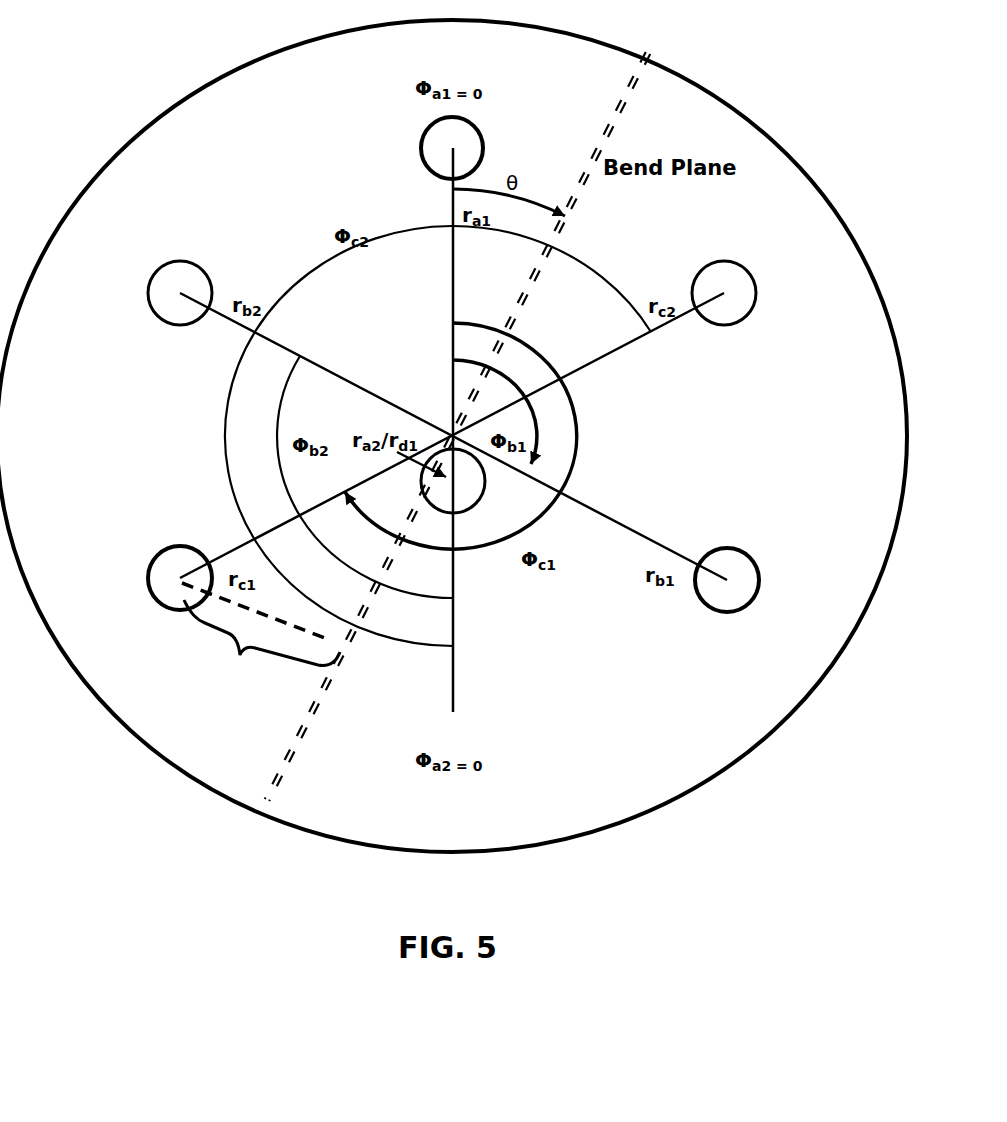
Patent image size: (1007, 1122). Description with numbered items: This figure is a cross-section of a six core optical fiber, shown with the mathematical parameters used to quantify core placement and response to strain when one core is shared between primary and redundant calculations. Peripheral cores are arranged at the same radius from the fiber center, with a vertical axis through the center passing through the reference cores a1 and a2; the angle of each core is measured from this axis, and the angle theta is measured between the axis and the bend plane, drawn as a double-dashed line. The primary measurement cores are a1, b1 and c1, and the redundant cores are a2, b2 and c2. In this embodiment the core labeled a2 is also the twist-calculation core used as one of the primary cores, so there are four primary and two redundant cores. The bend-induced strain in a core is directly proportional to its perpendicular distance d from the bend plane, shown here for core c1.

The primary measurement core a1 is at (438, 148).
The redundant measurement core a2 is at (466, 493).
The primary measurement core b1 is at (740, 581).
The redundant measurement core b2 is at (166, 293).
The primary measurement core c1 is at (169, 585).
The redundant measurement core c2 is at (736, 293).
The perpendicular distance from the bend plane d is at (261, 635).